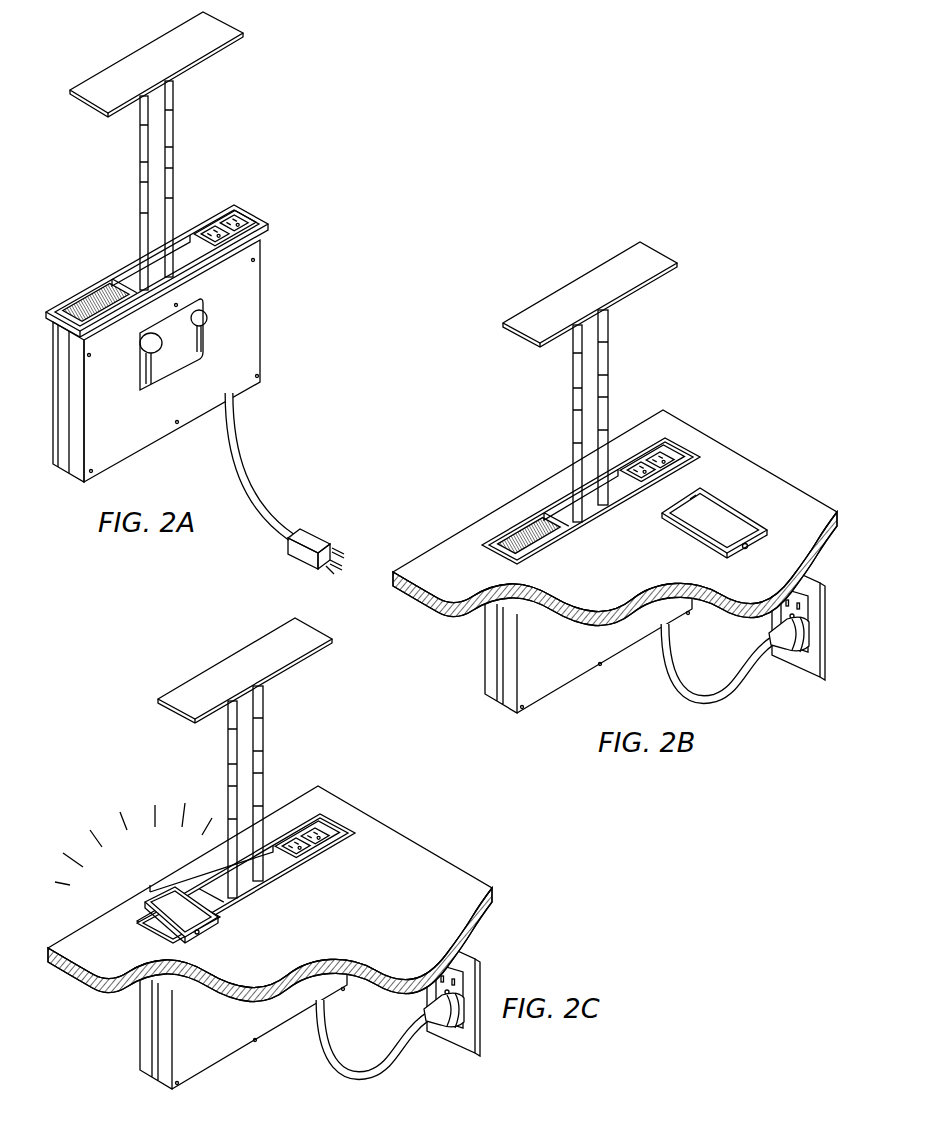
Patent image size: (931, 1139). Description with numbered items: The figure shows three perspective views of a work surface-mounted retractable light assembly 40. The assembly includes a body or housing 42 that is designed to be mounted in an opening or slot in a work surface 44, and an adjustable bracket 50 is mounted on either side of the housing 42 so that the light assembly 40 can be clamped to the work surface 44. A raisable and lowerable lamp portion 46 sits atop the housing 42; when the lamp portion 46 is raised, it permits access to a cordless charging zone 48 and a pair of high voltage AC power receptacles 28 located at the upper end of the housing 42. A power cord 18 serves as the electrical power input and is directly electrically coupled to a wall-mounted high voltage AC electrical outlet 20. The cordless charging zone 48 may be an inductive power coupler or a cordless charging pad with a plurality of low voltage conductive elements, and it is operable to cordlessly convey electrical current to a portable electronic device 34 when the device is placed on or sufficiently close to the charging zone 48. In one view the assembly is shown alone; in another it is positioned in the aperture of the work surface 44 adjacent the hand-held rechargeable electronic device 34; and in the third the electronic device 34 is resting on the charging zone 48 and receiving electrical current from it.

In FIG. 2A, the power cord 18 is at (252, 483).
In FIG. 2B, the power cord 18 is at (702, 692).
In FIG. 2C, the power cord 18 is at (392, 1034).
In FIG. 2B, the wall-mounted high voltage AC electrical outlet 20 is at (810, 577).
In FIG. 2C, the wall-mounted high voltage AC electrical outlet 20 is at (474, 991).
In FIG. 2A, the high voltage AC power receptacle 28 is at (198, 223).
In FIG. 2B, the high voltage AC power receptacle 28 is at (633, 453).
In FIG. 2C, the high voltage AC power receptacle 28 is at (307, 804).
In FIG. 2B, the portable electronic device 34 is at (752, 498).
In FIG. 2C, the portable electronic device 34 is at (214, 916).
In FIG. 2A, the retractable light assembly 40 is at (343, 101).
In FIG. 2B, the retractable light assembly 40 is at (615, 470).
In FIG. 2C, the retractable light assembly 40 is at (270, 887).
In FIG. 2A, the housing 42 is at (246, 290).
In FIG. 2B, the work surface 44 is at (733, 455).
In FIG. 2C, the work surface 44 is at (270, 894).
In FIG. 2A, the lamp portion 46 is at (243, 66).
In FIG. 2B, the lamp portion 46 is at (645, 311).
In FIG. 2C, the lamp portion 46 is at (207, 670).
In FIG. 2A, the cordless charging zone 48 is at (79, 292).
In FIG. 2B, the cordless charging zone 48 is at (508, 524).
In FIG. 2C, the cordless charging zone 48 is at (157, 927).
In FIG. 2A, the adjustable bracket 50 is at (218, 335).